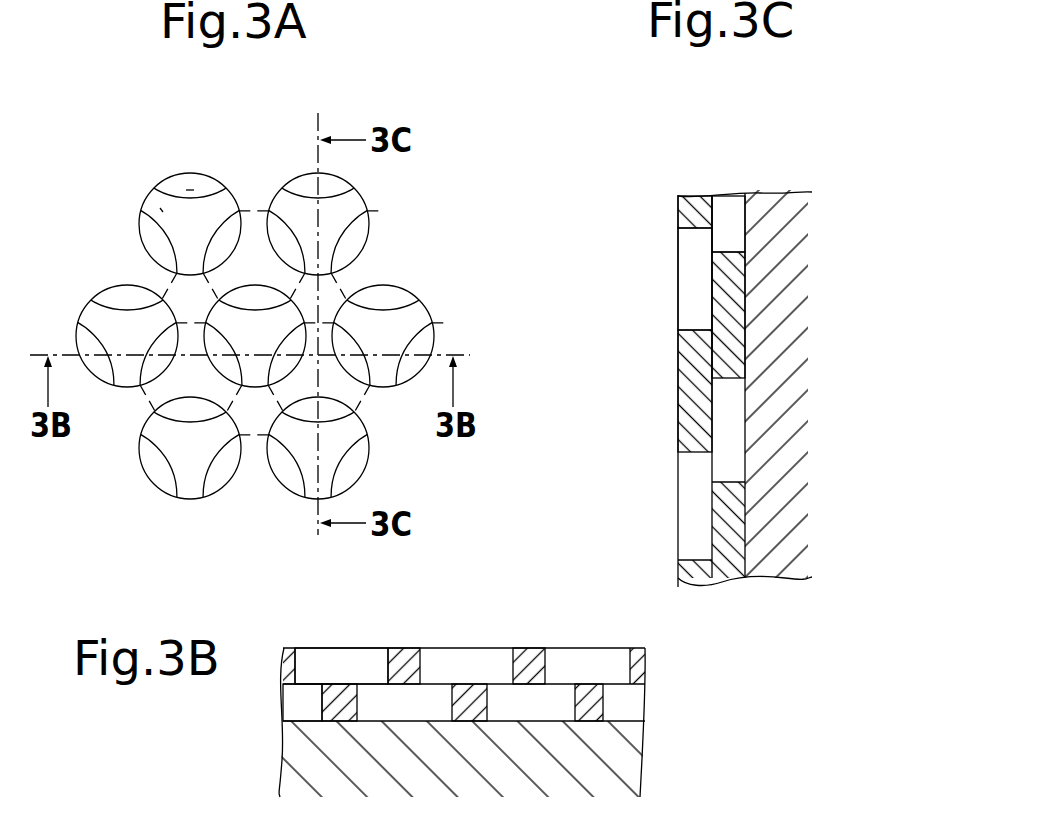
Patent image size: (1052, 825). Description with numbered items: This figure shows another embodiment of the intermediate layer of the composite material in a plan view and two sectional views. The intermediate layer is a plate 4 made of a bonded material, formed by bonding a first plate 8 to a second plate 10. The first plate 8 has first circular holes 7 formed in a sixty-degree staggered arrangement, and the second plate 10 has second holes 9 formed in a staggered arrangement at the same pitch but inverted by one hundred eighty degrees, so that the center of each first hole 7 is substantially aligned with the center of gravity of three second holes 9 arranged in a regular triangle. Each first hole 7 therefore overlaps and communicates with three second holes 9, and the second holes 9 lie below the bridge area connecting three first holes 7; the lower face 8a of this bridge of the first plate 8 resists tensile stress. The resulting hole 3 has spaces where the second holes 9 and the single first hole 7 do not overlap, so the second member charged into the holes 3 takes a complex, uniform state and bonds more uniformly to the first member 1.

In FIG. 3C, the first member 1 is at (788, 200).
In FIG. 3B, the first member 1 is at (613, 782).
In FIG. 3A, the hole 3 is at (230, 111).
In FIG. 3C, the hole 3 is at (630, 207).
In FIG. 3B, the hole 3 is at (363, 613).
In FIG. 3C, the plate 4 is at (755, 132).
In FIG. 3B, the plate 4 is at (707, 648).
In FIG. 3A, the first circular hole 7 is at (157, 200).
In FIG. 3C, the first circular hole 7 is at (698, 277).
In FIG. 3B, the first circular hole 7 is at (332, 670).
In FIG. 3C, the first plate 8 is at (699, 198).
In FIG. 3B, the first plate 8 is at (640, 663).
In FIG. 3C, the lower face 8a is at (714, 430).
In FIG. 3B, the lower face 8a is at (400, 685).
In FIG. 3A, the second hole 9 is at (190, 188).
In FIG. 3C, the second hole 9 is at (718, 233).
In FIG. 3B, the second hole 9 is at (303, 703).
In FIG. 3C, the second plate 10 is at (728, 258).
In FIG. 3B, the second plate 10 is at (602, 705).